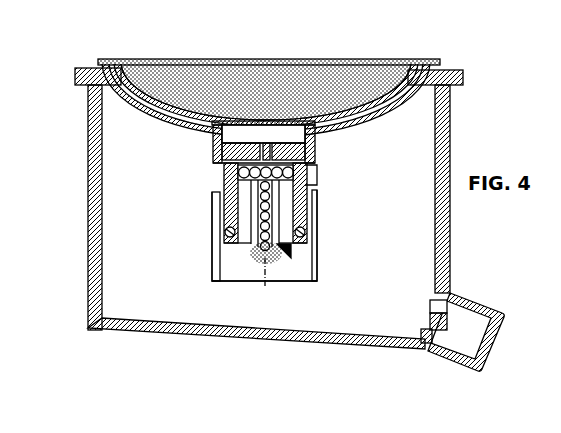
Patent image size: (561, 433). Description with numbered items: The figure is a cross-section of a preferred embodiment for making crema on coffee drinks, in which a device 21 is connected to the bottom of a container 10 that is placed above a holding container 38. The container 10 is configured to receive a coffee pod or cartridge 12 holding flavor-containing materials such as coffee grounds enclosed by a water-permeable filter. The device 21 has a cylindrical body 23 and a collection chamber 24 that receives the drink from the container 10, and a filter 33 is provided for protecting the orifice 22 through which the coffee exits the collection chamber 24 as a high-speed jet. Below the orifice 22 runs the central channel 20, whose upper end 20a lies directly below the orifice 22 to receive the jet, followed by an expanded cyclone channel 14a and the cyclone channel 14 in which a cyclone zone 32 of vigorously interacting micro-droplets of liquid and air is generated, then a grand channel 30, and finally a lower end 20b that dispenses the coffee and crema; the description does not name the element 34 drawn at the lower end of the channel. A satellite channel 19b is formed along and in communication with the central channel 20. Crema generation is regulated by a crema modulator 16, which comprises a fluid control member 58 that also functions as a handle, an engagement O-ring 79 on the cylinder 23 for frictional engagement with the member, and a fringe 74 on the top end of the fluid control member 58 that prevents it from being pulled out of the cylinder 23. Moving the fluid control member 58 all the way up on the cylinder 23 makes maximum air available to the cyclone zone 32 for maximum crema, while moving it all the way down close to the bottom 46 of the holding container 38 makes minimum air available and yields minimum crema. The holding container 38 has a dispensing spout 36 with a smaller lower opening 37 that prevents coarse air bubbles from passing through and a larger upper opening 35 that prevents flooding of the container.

The container 10 is at (252, 208).
The coffee pod or cartridge 12 is at (163, 55).
The cyclone channel 14 is at (315, 218).
The expanded cyclone channel 14a is at (317, 173).
The crema modulator 16 is at (210, 241).
The satellite channel 19b is at (213, 208).
The central channel 20 is at (266, 252).
The upper end 20a is at (318, 162).
The lower end 20b is at (283, 282).
The device 21 is at (157, 270).
The orifice 22 is at (217, 161).
The cylindrical body 23 is at (222, 182).
The collection chamber 24 is at (283, 137).
The grand channel 30 is at (212, 262).
The cyclone zone 32 is at (318, 180).
The filter 33 is at (213, 133).
The shaft end 34 is at (257, 258).
The larger upper opening 35 is at (435, 305).
The dispensing spout 36 is at (478, 320).
The smaller lower opening 37 is at (421, 332).
The holding container 38 is at (82, 218).
The bottom 46 is at (258, 325).
The fluid control member 58 is at (210, 272).
The fringe 74 is at (316, 196).
The engagement O-ring 79 is at (313, 236).